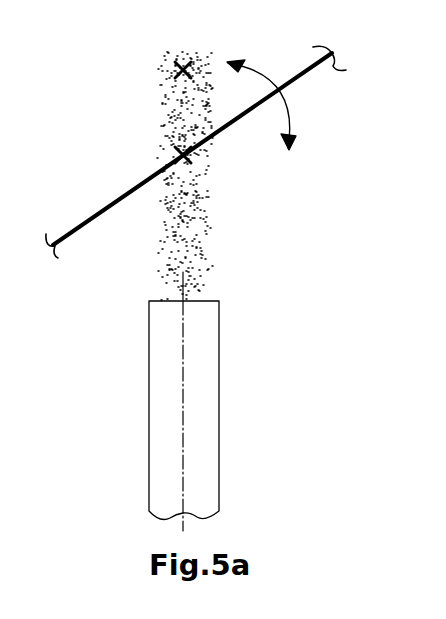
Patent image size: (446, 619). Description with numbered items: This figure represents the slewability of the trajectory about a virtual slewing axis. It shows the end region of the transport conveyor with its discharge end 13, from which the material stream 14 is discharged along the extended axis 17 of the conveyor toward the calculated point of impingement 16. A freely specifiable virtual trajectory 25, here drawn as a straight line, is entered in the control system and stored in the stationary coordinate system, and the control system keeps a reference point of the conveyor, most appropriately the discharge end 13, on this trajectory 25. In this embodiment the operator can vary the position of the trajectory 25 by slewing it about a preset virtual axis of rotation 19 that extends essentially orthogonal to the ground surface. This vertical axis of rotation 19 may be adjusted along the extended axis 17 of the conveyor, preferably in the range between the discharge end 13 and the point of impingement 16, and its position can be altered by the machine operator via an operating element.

The discharge end 13 is at (210, 300).
The laser beam / spray region 14 is at (167, 233).
The calculated point of impingement 16 is at (178, 73).
The central axis 17 is at (183, 356).
The virtual axis of rotation 19 is at (180, 157).
The virtual trajectory 25 is at (307, 70).